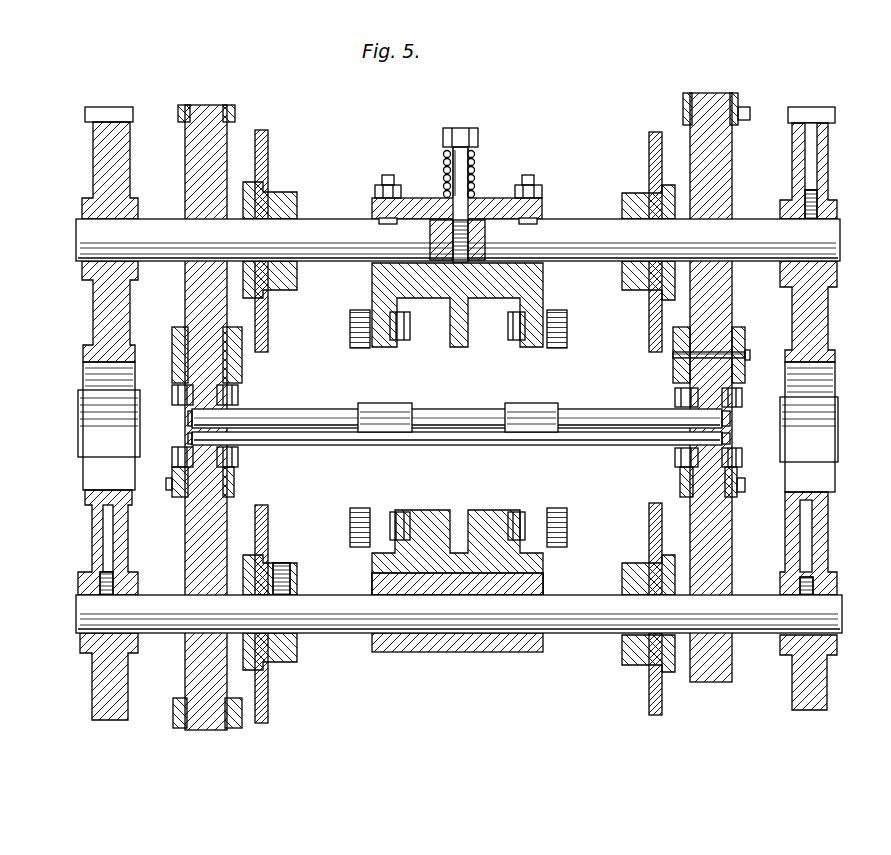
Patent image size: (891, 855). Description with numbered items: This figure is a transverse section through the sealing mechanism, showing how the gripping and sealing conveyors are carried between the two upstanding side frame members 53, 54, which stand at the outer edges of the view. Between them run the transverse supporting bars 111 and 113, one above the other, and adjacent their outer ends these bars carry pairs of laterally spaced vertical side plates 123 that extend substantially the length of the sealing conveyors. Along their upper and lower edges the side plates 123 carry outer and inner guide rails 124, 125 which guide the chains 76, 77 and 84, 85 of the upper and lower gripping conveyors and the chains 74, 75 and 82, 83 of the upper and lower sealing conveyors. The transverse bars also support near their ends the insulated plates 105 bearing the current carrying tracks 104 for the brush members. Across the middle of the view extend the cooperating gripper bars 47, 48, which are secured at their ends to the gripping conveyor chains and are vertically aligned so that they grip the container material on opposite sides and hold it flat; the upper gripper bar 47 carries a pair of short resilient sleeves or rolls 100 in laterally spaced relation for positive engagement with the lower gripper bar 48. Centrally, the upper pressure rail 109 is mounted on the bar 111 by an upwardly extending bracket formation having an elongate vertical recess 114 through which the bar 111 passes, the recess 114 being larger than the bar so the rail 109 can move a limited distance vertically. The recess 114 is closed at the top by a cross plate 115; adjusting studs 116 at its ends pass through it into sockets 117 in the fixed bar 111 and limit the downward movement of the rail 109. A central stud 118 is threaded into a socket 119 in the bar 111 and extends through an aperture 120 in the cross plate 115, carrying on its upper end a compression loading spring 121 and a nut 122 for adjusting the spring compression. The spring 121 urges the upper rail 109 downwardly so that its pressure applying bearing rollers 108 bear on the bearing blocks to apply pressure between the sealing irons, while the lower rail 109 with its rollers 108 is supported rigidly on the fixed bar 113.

The gripper bar 47 is at (590, 412).
The gripper bar 48 is at (598, 441).
The side frame member 53 is at (90, 483).
The side frame member 54 is at (826, 480).
The endless chain 74 is at (238, 394).
The endless chain 75 is at (675, 396).
The endless chain 76 is at (175, 396).
The endless chain 77 is at (738, 397).
The endless chain 82 is at (238, 459).
The endless chain 83 is at (675, 462).
The endless chain 84 is at (175, 455).
The endless chain 85 is at (735, 455).
The sleeve or roll 100 is at (388, 403).
The current carrying track 104 is at (268, 152).
The insulated plate 105 is at (268, 132).
The pressure applying bearing roller 108 is at (360, 314).
The pressure rail 109 is at (480, 300).
The transverse supporting bar 111 is at (740, 235).
The transverse supporting bar 113 is at (564, 606).
The recess 114 is at (500, 216).
The cross plate 115 is at (488, 226).
The adjusting stud 116 is at (536, 176).
The socket 117 is at (540, 222).
The central stud 118 is at (452, 160).
The socket 119 is at (437, 230).
The aperture 120 is at (475, 178).
The compression loading spring 121 is at (470, 152).
The nut 122 is at (470, 137).
The vertical side plate 123 is at (212, 150).
The outer guide rail 124 is at (178, 110).
The inner guide rail 125 is at (231, 108).